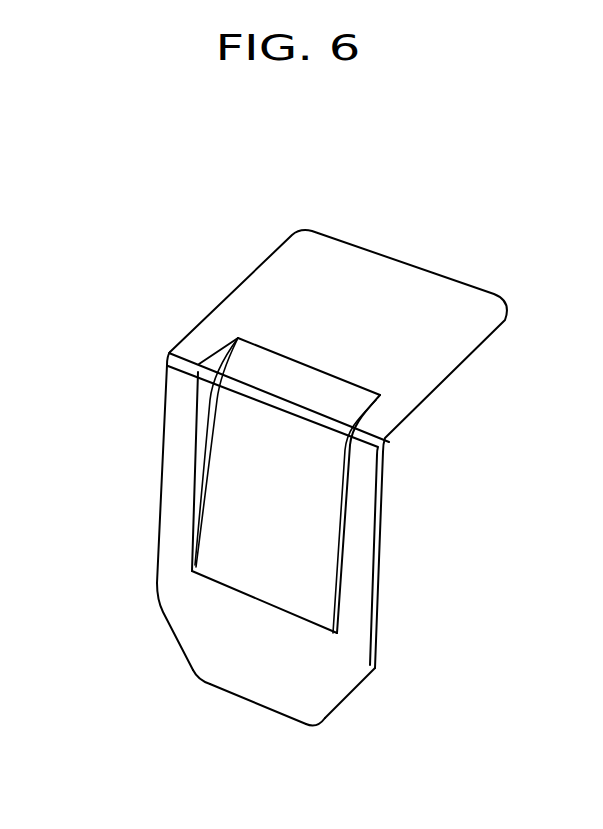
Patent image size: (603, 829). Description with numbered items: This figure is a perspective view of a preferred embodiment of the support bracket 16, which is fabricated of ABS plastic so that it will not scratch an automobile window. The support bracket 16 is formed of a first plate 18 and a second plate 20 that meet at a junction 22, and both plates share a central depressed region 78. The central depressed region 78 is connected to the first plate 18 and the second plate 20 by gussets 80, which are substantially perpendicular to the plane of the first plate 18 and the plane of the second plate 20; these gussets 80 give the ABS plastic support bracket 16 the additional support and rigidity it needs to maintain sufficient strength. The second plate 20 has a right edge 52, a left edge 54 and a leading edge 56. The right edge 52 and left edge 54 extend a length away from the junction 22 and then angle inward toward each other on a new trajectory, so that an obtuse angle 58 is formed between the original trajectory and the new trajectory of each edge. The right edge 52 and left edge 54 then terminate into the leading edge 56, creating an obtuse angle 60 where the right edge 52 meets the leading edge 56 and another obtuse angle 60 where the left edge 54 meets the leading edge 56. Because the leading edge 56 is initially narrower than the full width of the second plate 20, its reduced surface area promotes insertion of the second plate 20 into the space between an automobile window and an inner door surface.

The support bracket 16 is at (353, 313).
The first plate 18 is at (403, 353).
The second plate 20 is at (273, 680).
The junction 22 is at (393, 437).
The right edge 52 is at (380, 582).
The left edge 54 is at (158, 502).
The leading edge 56 is at (257, 705).
The obtuse angle 58 is at (168, 590).
The obtuse angle 60 is at (202, 672).
The central depressed region 78 is at (317, 393).
The gussets 80 is at (217, 363).